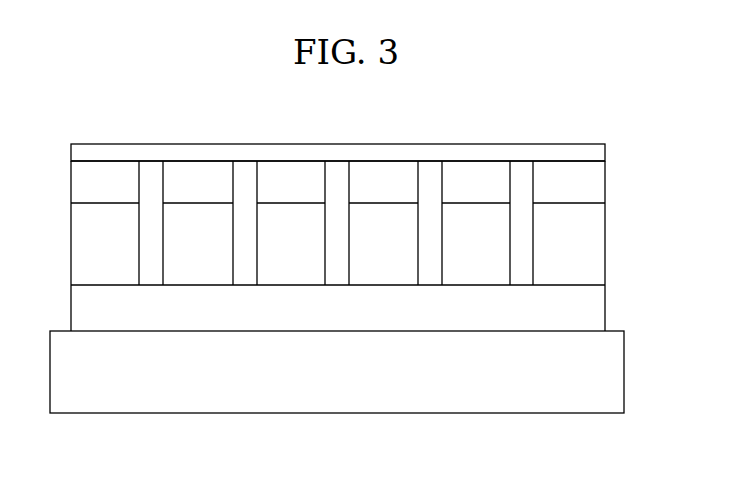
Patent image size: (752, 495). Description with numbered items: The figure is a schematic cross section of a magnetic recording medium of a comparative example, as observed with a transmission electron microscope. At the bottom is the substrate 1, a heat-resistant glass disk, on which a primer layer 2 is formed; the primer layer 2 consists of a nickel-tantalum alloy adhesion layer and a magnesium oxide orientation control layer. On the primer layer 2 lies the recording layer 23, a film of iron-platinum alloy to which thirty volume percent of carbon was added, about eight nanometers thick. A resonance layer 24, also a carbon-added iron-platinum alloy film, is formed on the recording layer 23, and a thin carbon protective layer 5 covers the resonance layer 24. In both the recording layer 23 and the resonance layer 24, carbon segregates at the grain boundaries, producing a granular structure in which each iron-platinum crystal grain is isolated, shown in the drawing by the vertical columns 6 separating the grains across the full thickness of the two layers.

The substrate 1 is at (616, 367).
The primer layer 2 is at (597, 312).
The recording layer 23 is at (597, 248).
The resonance layer 24 is at (597, 191).
The protective layer 5 is at (595, 157).
The trench / isolation region 6 is at (523, 170).